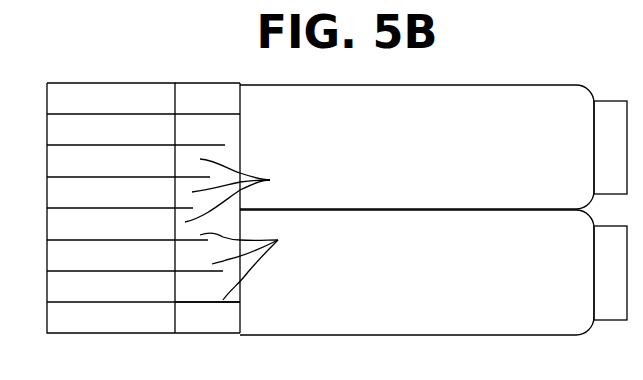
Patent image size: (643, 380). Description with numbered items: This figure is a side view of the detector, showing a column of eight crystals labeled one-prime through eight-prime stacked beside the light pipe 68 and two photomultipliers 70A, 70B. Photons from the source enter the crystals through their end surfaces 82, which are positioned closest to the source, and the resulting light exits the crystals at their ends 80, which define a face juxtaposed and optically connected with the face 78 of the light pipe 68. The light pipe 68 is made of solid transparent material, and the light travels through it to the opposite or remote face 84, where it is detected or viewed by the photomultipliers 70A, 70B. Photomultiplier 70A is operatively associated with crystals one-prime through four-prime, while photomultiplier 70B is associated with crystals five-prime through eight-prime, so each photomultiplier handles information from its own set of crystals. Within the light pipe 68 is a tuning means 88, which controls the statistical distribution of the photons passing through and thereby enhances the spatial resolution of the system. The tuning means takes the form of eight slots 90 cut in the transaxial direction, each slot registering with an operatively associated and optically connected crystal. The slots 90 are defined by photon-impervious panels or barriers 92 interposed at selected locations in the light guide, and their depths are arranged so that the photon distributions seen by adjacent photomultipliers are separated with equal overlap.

The end surfaces 82 is at (44, 100).
The ends of the crystals 80 is at (163, 98).
The face of the light pipe 78 is at (176, 85).
The light pipe 68 is at (217, 113).
The remote face of the light pipe 84 is at (242, 124).
The slots 90 is at (241, 190).
The light impervious panels or barriers 92 is at (250, 262).
The tuning means 88 is at (217, 303).
The photomultiplier 70A is at (367, 188).
The photomultiplier 70B is at (367, 315).